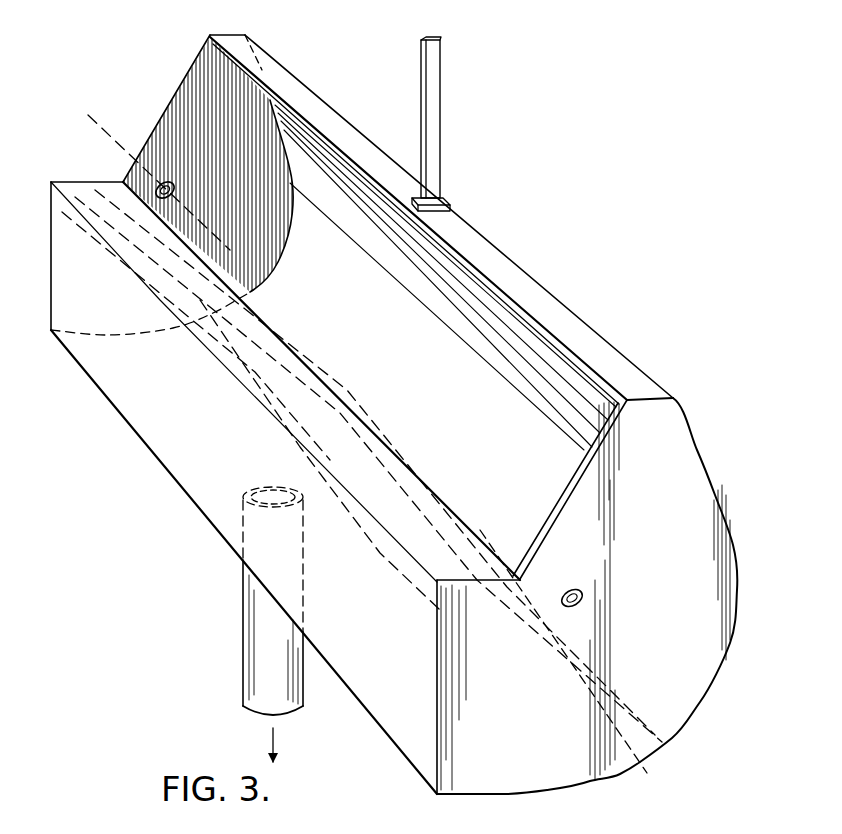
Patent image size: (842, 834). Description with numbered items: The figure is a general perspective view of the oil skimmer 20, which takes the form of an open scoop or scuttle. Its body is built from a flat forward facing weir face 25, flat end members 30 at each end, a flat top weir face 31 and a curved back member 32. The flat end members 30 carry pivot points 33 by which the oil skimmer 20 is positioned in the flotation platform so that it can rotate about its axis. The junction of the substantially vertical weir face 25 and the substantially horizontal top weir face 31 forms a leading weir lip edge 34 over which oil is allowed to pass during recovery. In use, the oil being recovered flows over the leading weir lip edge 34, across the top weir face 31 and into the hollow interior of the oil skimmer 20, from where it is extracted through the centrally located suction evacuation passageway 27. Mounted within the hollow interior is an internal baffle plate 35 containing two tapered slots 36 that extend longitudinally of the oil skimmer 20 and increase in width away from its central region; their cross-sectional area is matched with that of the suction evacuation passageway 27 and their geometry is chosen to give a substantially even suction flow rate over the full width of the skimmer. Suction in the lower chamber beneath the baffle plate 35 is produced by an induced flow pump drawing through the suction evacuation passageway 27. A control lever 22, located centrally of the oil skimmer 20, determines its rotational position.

The oil skimmer 20 is at (204, 521).
The control lever 22 is at (432, 128).
The forward facing weir face 25 is at (118, 357).
The suction evacuation passageway 27 is at (256, 650).
The flat end members 30 is at (668, 435).
The top weir face 31 is at (92, 190).
The curved back member 32 is at (290, 142).
The pivot points 33 is at (160, 180).
The leading weir lip edge 34 is at (260, 415).
The internal baffle plate 35 is at (575, 670).
The tapered slots 36 is at (255, 370).